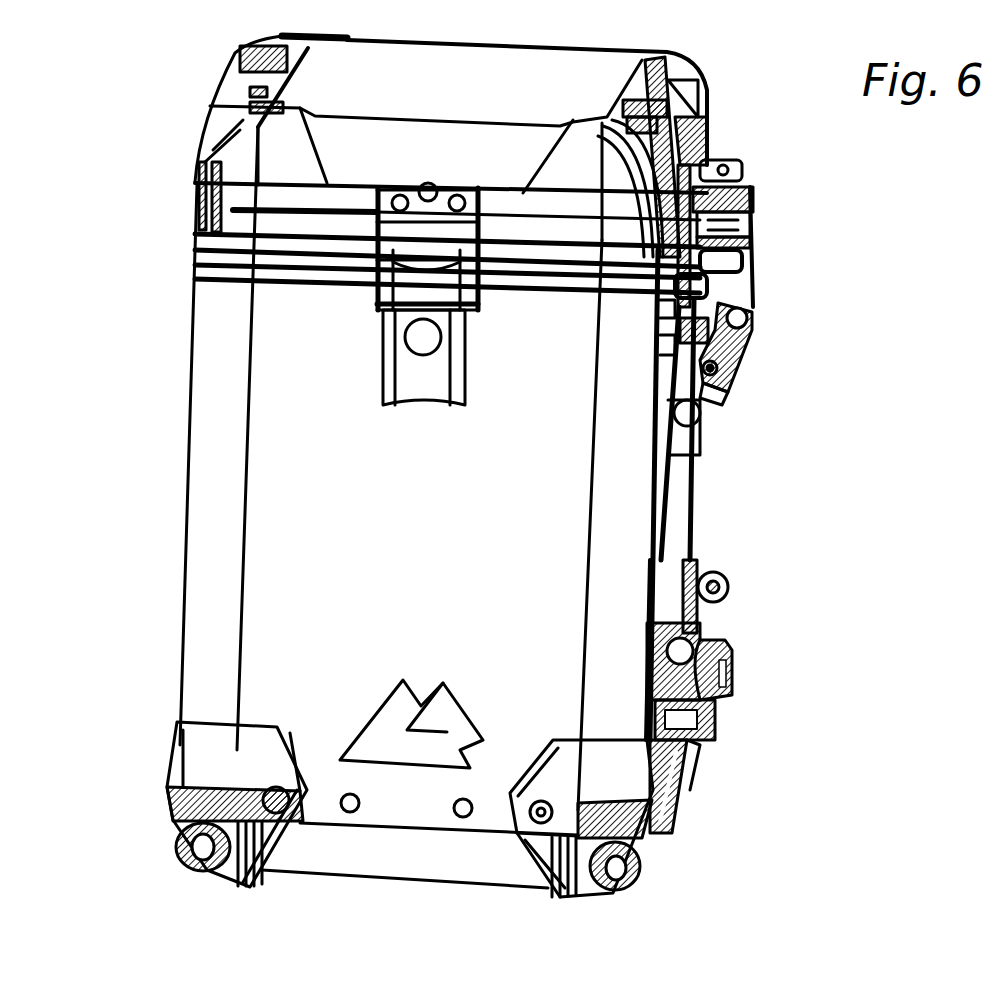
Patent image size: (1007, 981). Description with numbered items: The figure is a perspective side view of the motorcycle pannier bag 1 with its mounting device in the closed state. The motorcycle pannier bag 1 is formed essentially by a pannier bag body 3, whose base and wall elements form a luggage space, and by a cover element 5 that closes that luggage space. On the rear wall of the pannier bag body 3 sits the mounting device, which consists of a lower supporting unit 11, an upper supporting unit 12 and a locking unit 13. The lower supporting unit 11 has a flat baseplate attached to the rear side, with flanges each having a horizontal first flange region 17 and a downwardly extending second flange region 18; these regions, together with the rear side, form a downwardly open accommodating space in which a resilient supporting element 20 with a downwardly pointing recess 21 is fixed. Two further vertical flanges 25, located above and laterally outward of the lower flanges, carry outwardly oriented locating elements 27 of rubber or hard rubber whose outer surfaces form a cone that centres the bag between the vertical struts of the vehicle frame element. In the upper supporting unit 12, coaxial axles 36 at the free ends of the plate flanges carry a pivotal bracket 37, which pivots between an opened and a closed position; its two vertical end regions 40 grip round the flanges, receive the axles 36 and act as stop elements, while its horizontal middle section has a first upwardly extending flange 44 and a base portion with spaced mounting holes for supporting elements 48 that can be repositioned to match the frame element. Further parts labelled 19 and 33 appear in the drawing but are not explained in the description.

The motorcycle pannier bag 1 is at (152, 137).
The pannier bag body 3 is at (193, 422).
The cover element 5 is at (193, 184).
The lower supporting unit 11 is at (760, 656).
The upper supporting unit 12 is at (772, 317).
The locking unit 13 is at (756, 183).
The first flange region 17 is at (682, 505).
The second flange region 18 is at (722, 718).
The hinge block 19 is at (724, 640).
The supporting element 20 is at (700, 745).
The recess 21 is at (690, 748).
The flanges 25 is at (714, 571).
The locating elements 27 is at (735, 690).
The roller 33 is at (699, 428).
The axle 36 is at (727, 376).
The pivotal bracket 37 is at (754, 342).
The end regions 40 is at (745, 248).
The first upwardly extending flange 44 is at (657, 310).
The supporting elements 48 is at (655, 343).